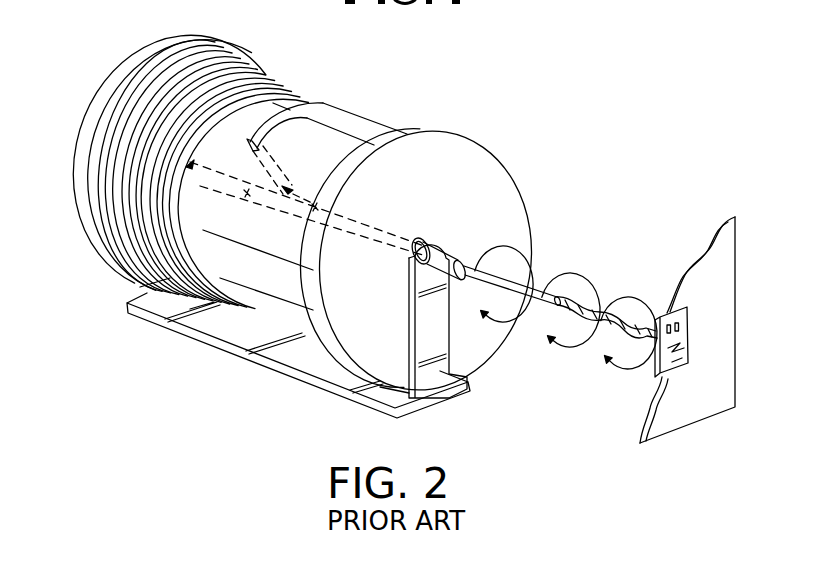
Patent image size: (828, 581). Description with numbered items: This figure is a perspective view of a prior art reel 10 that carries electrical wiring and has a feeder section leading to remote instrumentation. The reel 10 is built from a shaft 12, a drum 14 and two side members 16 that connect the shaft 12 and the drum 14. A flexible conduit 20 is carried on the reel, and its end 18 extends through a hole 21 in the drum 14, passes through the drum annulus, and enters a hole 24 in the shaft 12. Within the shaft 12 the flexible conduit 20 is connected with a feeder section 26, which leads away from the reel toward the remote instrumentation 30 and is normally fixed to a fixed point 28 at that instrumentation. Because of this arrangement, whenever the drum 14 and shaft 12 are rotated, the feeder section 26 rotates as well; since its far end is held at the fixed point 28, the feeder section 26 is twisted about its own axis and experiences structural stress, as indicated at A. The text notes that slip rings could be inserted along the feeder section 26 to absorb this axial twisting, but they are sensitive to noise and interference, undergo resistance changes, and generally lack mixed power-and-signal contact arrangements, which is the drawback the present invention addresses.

The prior art reel 10 is at (570, 128).
The shaft 12 is at (237, 205).
The drum 14 is at (375, 130).
The side members 16 is at (133, 68).
The end of flexible conduit 18 is at (294, 178).
The flexible conduit 20 is at (325, 103).
The hole in drum 21 is at (262, 146).
The hole of shaft 24 is at (300, 219).
The feeder section 26 is at (393, 233).
The fixed point 28 is at (683, 323).
The remote instrumentation 30 is at (660, 400).
The structural stress A is at (603, 313).